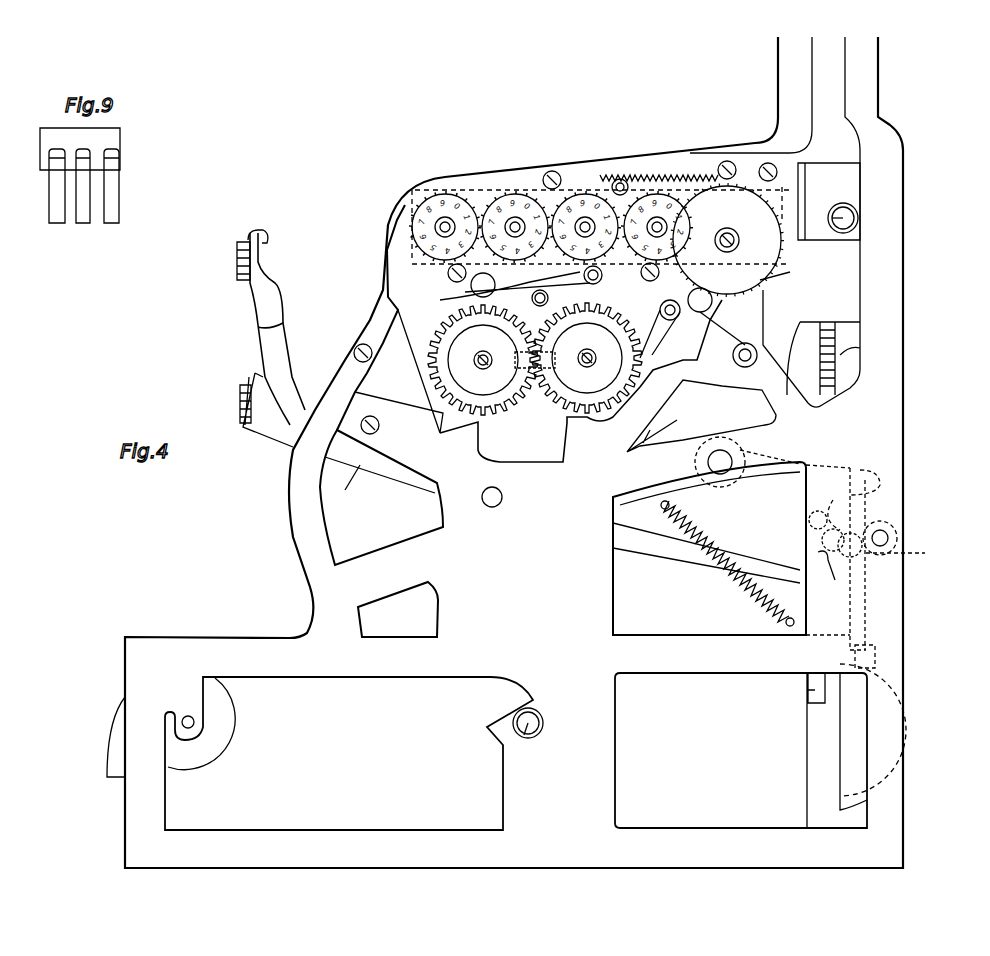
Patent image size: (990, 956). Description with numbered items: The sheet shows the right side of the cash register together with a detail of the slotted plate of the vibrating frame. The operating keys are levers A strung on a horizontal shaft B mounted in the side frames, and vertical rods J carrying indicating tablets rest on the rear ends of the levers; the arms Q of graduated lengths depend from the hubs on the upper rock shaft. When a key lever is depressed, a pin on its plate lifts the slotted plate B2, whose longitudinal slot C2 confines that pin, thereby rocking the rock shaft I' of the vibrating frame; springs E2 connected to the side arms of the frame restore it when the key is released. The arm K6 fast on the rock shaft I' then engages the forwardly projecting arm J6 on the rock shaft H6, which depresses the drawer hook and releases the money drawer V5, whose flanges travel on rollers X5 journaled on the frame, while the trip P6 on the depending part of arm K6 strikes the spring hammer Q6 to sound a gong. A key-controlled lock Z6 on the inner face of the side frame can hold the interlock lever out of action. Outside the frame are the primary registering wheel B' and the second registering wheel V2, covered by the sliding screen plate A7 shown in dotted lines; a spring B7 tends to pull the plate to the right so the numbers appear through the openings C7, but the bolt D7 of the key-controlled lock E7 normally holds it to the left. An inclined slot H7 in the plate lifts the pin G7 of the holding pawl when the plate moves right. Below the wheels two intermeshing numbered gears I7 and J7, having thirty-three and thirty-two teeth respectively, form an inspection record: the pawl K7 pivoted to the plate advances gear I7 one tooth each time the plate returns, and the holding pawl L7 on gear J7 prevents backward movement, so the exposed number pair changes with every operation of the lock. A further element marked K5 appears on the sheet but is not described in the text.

In FIG. 9, the slotted plate B2 is at (105, 140).
In FIG. 9, the longitudinal slot C2 is at (140, 168).
In FIG. 4, the openings C7 is at (658, 195).
In FIG. 4, the sliding screen plate A7 is at (485, 195).
In FIG. 4, the inclined slot H7 is at (590, 180).
In FIG. 4, the pin G7 is at (618, 178).
In FIG. 4, the spring B7 is at (690, 200).
In FIG. 4, the second registering wheel V2 is at (672, 195).
In FIG. 4, the lock bolt D7 is at (835, 187).
In FIG. 4, the lock E7 is at (830, 218).
In FIG. 4, the primary registering wheel B' is at (782, 275).
In FIG. 4, the pawl K7 is at (575, 290).
In FIG. 4, the gear wheel I7 is at (483, 360).
In FIG. 4, the gear wheel J7 is at (587, 358).
In FIG. 4, the holding pawl L7 is at (690, 330).
In FIG. 4, the vertical rods J is at (850, 350).
In FIG. 4, the key levers A is at (352, 482).
In FIG. 4, the horizontal shaft B is at (501, 497).
In FIG. 4, the rock shaft I' is at (736, 462).
In FIG. 4, the arm K6 is at (790, 470).
In FIG. 4, the trip P6 is at (850, 518).
In FIG. 4, the rock shaft H6 is at (888, 538).
In FIG. 4, the forwardly projecting arm J6 is at (901, 559).
In FIG. 4, the arms Q is at (825, 565).
In FIG. 4, the springs E2 is at (745, 588).
In FIG. 4, the spring hammer Q6 is at (868, 650).
In FIG. 4, the lock Z6 is at (520, 718).
In FIG. 4, the rollers X5 is at (222, 726).
In FIG. 4, the money drawer V5 is at (349, 753).
In FIG. 4, the frame opening K5 is at (848, 735).